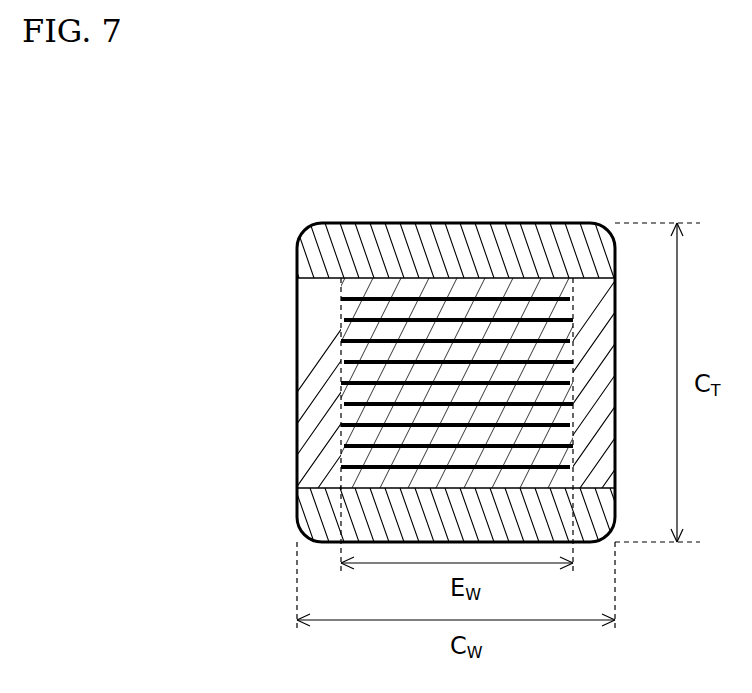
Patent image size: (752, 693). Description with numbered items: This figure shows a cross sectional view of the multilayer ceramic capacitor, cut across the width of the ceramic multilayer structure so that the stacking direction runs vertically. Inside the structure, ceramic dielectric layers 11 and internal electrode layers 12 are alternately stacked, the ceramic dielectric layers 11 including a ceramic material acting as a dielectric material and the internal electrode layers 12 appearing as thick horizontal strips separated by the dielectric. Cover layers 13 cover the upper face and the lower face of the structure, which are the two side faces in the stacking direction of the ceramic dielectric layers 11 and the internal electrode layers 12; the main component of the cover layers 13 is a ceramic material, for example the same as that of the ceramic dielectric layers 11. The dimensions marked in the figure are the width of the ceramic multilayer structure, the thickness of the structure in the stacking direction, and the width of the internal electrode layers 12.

The ceramic dielectric layer 11 is at (507, 290).
The internal electrode layer 12 is at (423, 276).
The cover layer 13 is at (578, 243).